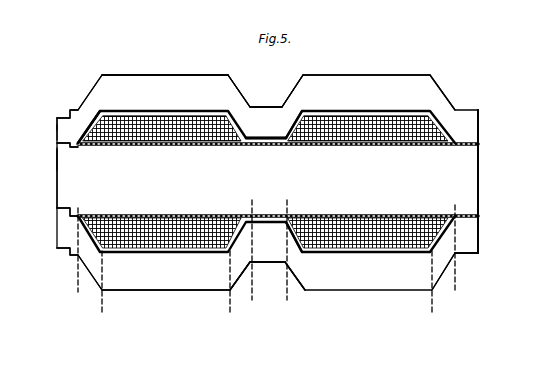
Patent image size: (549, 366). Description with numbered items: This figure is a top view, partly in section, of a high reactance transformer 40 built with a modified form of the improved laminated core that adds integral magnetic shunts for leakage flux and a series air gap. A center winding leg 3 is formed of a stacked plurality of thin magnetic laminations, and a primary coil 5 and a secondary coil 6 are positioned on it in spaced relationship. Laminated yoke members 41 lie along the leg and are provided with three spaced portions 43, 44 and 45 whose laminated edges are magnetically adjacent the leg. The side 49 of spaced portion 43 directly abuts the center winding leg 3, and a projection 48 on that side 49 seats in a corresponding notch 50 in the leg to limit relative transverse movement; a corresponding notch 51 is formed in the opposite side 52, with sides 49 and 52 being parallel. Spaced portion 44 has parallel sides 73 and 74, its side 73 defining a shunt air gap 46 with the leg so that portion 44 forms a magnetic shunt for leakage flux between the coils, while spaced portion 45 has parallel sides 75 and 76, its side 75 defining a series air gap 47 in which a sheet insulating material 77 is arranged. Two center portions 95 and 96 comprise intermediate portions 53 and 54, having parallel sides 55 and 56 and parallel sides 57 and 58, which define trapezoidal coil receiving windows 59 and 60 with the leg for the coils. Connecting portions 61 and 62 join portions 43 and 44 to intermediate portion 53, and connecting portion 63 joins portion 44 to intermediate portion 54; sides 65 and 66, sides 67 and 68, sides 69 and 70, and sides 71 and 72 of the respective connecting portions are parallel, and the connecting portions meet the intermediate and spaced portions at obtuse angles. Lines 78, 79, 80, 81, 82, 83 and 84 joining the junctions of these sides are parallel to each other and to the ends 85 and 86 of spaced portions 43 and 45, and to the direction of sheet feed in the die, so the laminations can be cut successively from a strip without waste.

The center winding leg 3 is at (465, 185).
The primary coil 5 is at (180, 133).
The secondary coil 6 is at (383, 133).
The high reactance transformer 40 is at (487, 79).
The yoke members 41 is at (246, 98).
The spaced portion 43 is at (57, 132).
The spaced portion 44 is at (267, 112).
The spaced portion 45 is at (475, 125).
The shunt air gap 46 is at (267, 146).
The series air gap 47 is at (476, 143).
The projection 48 is at (65, 146).
The side 49 is at (79, 147).
The notch 50 is at (55, 158).
The notch 51 is at (57, 114).
The side 52 is at (70, 110).
The intermediate portion 53 is at (150, 95).
The intermediate portion 54 is at (388, 97).
The side 55 is at (120, 112).
The side 56 is at (177, 75).
The side 57 is at (352, 112).
The side 58 is at (387, 75).
The coil receiving window 59 is at (195, 116).
The coil receiving window 60 is at (326, 116).
The connecting portion 61 is at (90, 103).
The connecting portion 62 is at (238, 108).
The connecting portion 63 is at (290, 109).
The side 65 is at (89, 280).
The side 66 is at (94, 268).
The side 67 is at (240, 284).
The side 68 is at (243, 277).
The side 69 is at (288, 262).
The side 70 is at (297, 262).
The side 71 is at (441, 278).
The side 72 is at (446, 273).
The side 73 is at (281, 147).
The side 74 is at (297, 147).
The side 75 is at (470, 252).
The side 76 is at (463, 256).
The sheet insulating material 77 is at (476, 217).
The line 78 is at (79, 208).
The line 79 is at (103, 308).
The line 80 is at (227, 315).
The line 81 is at (253, 211).
The line 82 is at (289, 210).
The line 83 is at (432, 307).
The line 84 is at (455, 207).
The end 85 is at (57, 229).
The end 86 is at (476, 233).
The center portion 95 is at (152, 53).
The center portion 96 is at (378, 66).